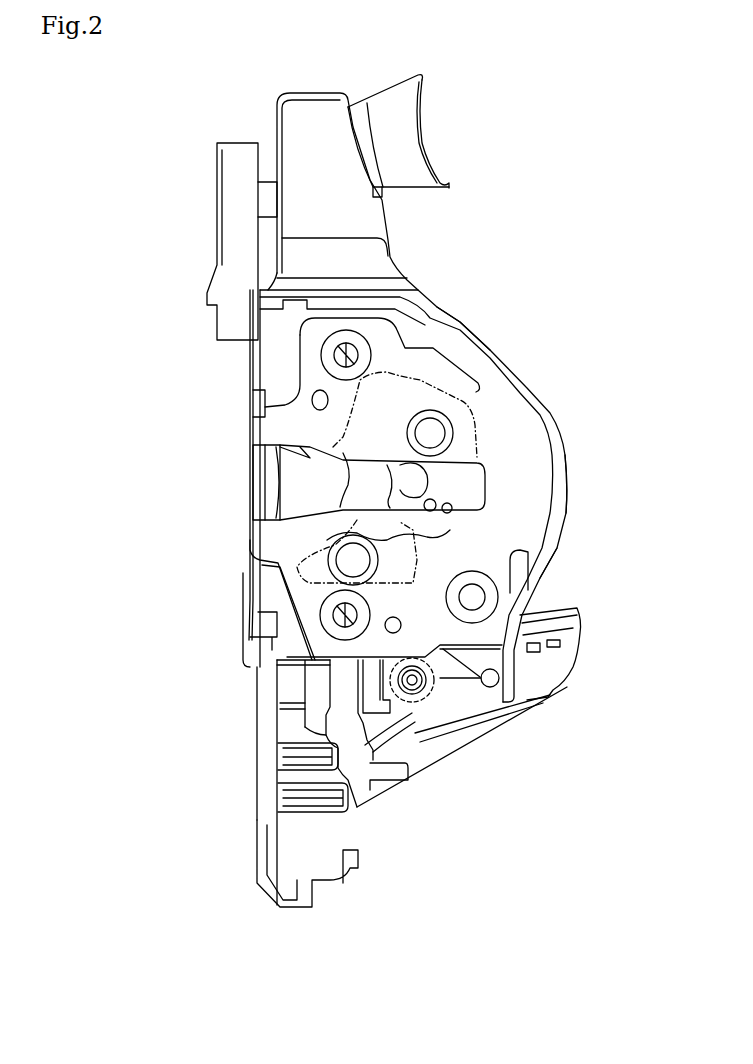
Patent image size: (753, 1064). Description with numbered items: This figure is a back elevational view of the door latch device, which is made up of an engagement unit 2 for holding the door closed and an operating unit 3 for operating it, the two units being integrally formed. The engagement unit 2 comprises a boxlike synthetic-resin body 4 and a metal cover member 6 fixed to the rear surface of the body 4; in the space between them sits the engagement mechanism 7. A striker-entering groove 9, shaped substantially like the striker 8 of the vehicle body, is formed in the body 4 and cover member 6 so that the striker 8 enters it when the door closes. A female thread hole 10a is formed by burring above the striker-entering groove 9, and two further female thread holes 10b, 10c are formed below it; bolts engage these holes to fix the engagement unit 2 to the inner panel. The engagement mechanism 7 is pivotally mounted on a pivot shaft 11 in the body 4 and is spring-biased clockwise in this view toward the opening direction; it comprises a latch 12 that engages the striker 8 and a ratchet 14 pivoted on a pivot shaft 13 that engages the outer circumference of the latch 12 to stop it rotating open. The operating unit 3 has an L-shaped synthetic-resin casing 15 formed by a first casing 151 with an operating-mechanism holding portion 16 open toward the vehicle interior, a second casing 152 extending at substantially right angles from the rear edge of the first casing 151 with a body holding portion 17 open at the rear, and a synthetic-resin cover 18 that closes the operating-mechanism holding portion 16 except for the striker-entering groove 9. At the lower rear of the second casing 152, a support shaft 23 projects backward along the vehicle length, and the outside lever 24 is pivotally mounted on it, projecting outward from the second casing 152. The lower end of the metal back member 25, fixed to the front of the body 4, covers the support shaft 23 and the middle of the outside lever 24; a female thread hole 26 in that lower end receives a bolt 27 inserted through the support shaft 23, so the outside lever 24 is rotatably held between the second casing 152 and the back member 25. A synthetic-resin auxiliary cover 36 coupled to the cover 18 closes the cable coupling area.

The engagement unit 2 is at (250, 380).
The operating unit 3 is at (254, 723).
The body 4 is at (278, 355).
The cover member 6 is at (520, 442).
The engagement mechanism 7 is at (333, 490).
The striker 8 is at (415, 480).
The striker-entering groove 9 is at (315, 460).
The female thread hole 10a is at (347, 356).
The female thread hole 10b is at (344, 615).
The female thread hole 10c is at (473, 597).
The pivot shaft 11 is at (430, 433).
The latch 12 is at (305, 480).
The pivot shaft 13 is at (350, 565).
The ratchet 14 is at (318, 550).
The casing 15 is at (435, 288).
The operating-mechanism holding portion 16 is at (313, 727).
The body holding portion 17 is at (560, 540).
The cover 18 is at (288, 703).
The support shaft 23 is at (427, 682).
The outside lever 24 is at (560, 668).
The back member 25 is at (428, 684).
The female thread hole 26 is at (417, 684).
The bolt 27 is at (412, 682).
The auxiliary cover 36 is at (258, 860).
The first casing 151 is at (303, 710).
The second casing 152 is at (568, 503).